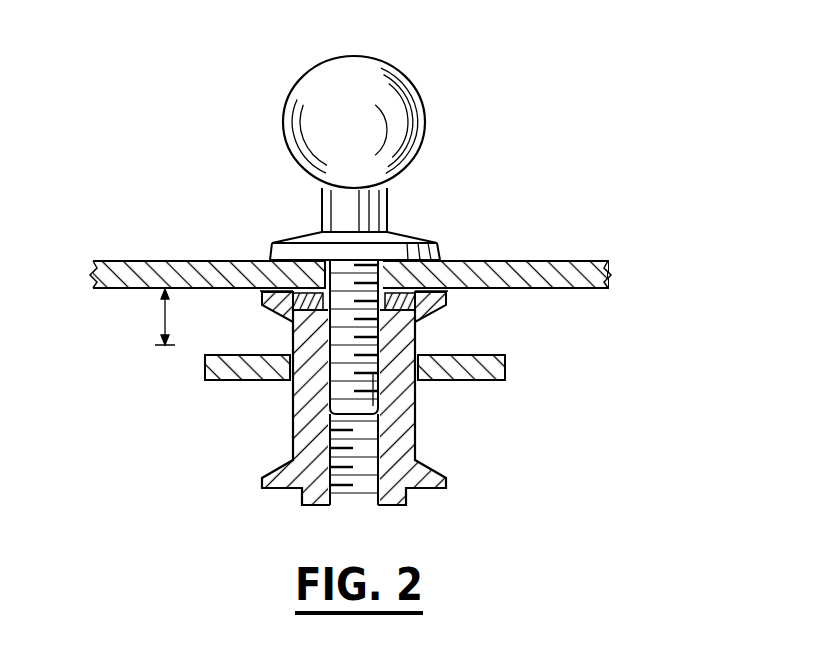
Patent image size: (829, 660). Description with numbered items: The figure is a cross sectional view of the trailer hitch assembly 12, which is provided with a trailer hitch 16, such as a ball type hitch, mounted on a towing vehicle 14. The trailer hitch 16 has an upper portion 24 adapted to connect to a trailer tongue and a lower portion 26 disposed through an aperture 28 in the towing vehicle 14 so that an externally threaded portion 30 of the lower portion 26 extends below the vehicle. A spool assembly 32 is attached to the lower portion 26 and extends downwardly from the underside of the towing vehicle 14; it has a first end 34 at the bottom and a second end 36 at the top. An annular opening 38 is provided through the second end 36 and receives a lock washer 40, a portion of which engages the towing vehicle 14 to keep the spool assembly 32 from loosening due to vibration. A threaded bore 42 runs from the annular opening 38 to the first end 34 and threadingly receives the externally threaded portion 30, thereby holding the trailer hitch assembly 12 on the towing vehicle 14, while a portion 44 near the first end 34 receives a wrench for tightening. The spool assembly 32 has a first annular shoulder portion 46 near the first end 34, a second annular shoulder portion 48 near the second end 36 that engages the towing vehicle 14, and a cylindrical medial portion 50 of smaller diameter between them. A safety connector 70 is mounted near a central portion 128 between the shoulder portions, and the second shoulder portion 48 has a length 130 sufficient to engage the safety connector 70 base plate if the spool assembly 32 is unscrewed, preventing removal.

The trailer hitch assembly 12 is at (332, 408).
The towing vehicle 14 is at (552, 260).
The trailer hitch 16 is at (390, 154).
The upper portion 24 is at (422, 130).
The lower portion 26 is at (400, 360).
The aperture 28 is at (445, 258).
The externally threaded portion 30 is at (378, 410).
The spool assembly 32 is at (379, 315).
The first end 34 is at (412, 507).
The second end 36 is at (450, 294).
The annular opening 38 is at (428, 318).
The lock washer 40 is at (420, 333).
The threaded bore 42 is at (368, 467).
The portion 44 is at (413, 497).
The first annular shoulder portion 46 is at (263, 488).
The second annular shoulder portion 48 is at (263, 302).
The medial portion 50 is at (386, 433).
The safety connector 70 is at (508, 373).
The central portion 128 is at (292, 387).
The length 130 is at (165, 308).